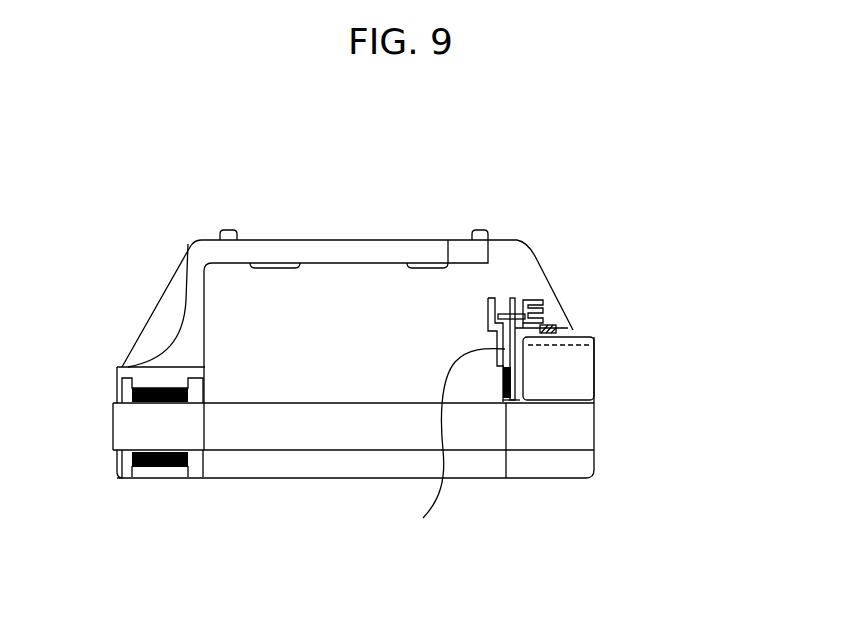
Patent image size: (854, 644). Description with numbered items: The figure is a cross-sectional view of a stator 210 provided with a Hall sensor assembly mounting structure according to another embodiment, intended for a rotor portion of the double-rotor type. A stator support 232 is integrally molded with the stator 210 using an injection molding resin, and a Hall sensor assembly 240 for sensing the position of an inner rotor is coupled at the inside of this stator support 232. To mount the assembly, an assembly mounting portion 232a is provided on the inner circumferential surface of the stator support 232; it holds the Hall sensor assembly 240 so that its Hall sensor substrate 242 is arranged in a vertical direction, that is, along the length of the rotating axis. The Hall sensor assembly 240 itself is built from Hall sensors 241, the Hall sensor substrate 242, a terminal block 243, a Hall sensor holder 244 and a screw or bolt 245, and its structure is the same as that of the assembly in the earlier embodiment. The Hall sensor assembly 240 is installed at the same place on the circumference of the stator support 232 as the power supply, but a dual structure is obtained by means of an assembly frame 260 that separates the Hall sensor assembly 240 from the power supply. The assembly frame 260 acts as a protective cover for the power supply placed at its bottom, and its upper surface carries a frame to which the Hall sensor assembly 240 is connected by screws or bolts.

The stator 210 is at (150, 469).
The stator support 232 is at (405, 240).
The assembly mounting portion 232a is at (513, 402).
The Hall sensor assembly 240 is at (619, 337).
The Hall sensors 241 is at (594, 385).
The Hall sensor substrate 242 is at (527, 362).
The terminal block 243 is at (550, 322).
The Hall sensor holder 244 is at (500, 293).
The screw or bolt 245 is at (572, 330).
The assembly frame 260 is at (447, 452).